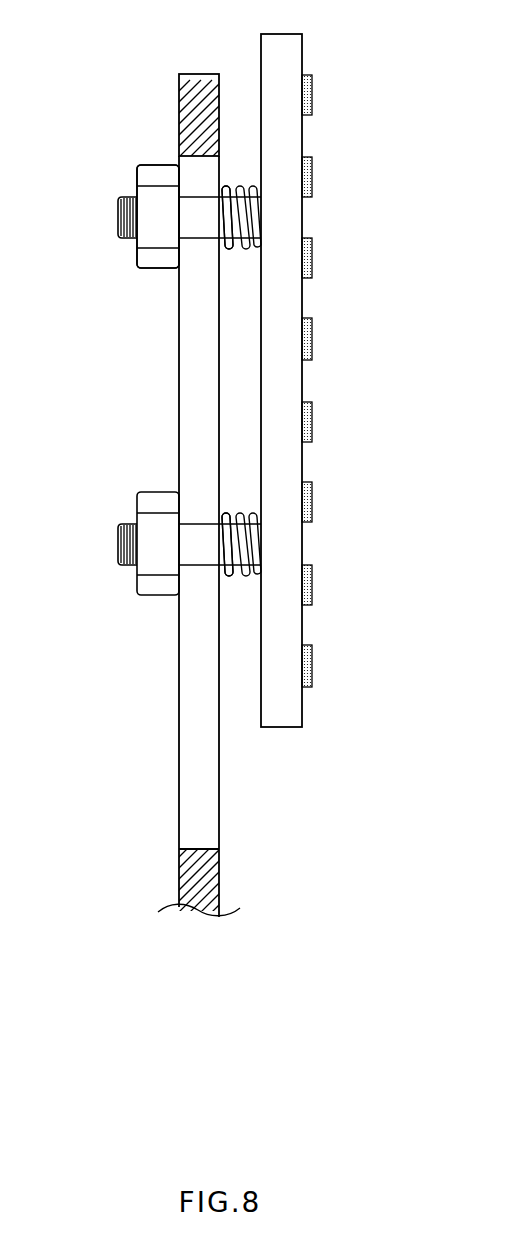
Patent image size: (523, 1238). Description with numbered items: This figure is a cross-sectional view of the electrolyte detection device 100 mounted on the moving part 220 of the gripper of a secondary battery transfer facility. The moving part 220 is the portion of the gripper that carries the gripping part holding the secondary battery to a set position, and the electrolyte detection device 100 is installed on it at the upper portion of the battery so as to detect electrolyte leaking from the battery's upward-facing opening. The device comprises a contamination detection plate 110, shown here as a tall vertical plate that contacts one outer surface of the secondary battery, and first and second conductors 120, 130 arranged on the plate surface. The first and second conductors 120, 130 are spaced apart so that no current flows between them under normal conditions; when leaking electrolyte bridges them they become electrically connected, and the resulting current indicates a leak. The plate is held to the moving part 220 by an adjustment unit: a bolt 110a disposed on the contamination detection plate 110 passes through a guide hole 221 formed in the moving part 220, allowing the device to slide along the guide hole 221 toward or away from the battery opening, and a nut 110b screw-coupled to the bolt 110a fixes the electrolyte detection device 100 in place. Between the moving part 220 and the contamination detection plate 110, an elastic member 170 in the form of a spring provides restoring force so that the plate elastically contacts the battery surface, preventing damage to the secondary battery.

The electrolyte detection device 100 is at (365, 380).
The contamination detection plate 110 is at (302, 52).
The bolt 110a is at (118, 214).
The nut 110b is at (157, 268).
The first conductor 120 is at (312, 92).
The second conductor 130 is at (349, 422).
The elastic member 170 is at (249, 246).
The moving part 220 is at (197, 74).
The guide hole 221 is at (199, 849).